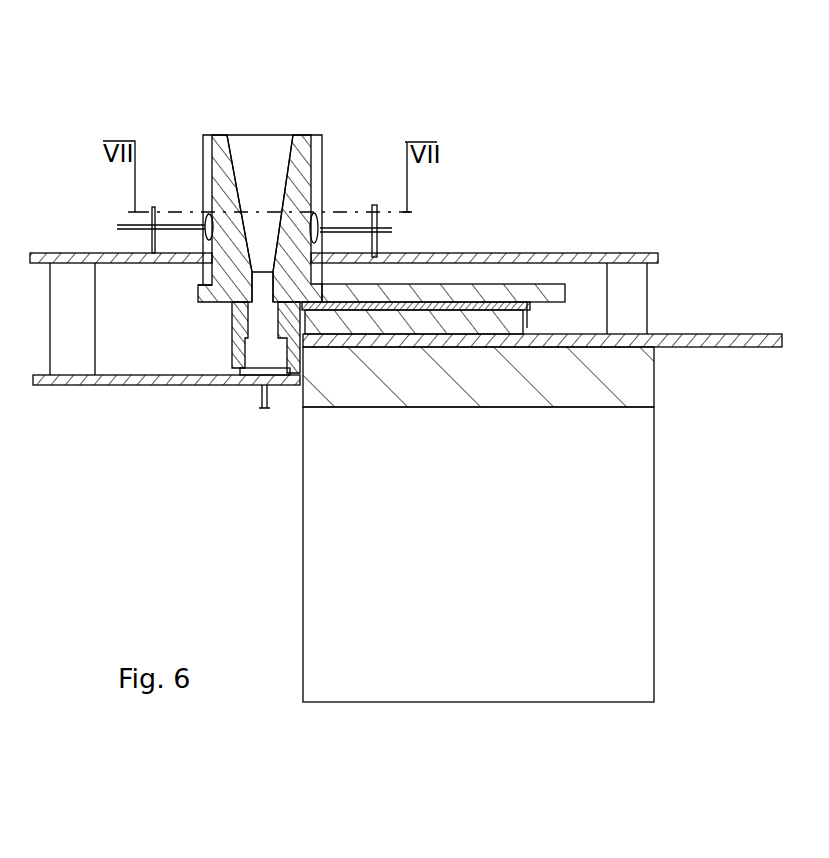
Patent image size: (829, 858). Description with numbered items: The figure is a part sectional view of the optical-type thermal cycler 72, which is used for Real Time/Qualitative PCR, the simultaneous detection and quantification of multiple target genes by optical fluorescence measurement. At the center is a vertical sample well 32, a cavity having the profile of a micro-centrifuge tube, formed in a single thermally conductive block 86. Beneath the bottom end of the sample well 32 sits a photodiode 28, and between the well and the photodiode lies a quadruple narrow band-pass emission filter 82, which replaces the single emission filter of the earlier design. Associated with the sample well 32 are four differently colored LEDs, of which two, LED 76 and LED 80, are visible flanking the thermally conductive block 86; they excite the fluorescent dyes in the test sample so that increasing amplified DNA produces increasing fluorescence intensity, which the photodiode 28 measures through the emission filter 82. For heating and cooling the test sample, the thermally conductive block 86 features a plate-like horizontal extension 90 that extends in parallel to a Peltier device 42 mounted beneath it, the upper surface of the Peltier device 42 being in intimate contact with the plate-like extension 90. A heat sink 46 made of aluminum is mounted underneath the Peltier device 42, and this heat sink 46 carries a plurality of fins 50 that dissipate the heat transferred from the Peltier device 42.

The optical-type thermal cycler 72 is at (168, 113).
The thermally conductive block 86 is at (308, 150).
The sample well 32 is at (257, 163).
The plate-like horizontal extension 90 is at (460, 293).
The Peltier device 42 is at (410, 316).
The LED 76 is at (207, 223).
The LED 80 is at (318, 218).
The quadruple narrow band-pass emission filter 82 is at (233, 360).
The photodiode 28 is at (263, 357).
The heat sink 46 is at (630, 385).
The fins 50 is at (615, 512).